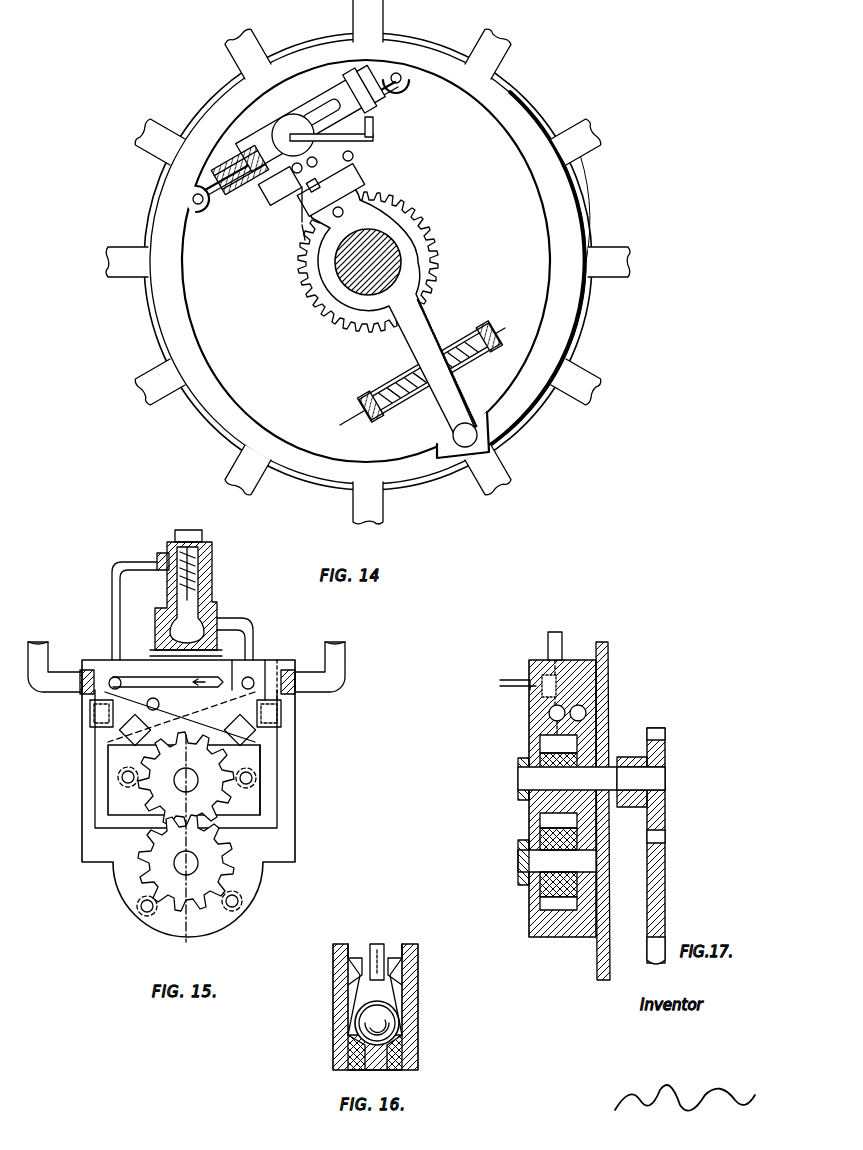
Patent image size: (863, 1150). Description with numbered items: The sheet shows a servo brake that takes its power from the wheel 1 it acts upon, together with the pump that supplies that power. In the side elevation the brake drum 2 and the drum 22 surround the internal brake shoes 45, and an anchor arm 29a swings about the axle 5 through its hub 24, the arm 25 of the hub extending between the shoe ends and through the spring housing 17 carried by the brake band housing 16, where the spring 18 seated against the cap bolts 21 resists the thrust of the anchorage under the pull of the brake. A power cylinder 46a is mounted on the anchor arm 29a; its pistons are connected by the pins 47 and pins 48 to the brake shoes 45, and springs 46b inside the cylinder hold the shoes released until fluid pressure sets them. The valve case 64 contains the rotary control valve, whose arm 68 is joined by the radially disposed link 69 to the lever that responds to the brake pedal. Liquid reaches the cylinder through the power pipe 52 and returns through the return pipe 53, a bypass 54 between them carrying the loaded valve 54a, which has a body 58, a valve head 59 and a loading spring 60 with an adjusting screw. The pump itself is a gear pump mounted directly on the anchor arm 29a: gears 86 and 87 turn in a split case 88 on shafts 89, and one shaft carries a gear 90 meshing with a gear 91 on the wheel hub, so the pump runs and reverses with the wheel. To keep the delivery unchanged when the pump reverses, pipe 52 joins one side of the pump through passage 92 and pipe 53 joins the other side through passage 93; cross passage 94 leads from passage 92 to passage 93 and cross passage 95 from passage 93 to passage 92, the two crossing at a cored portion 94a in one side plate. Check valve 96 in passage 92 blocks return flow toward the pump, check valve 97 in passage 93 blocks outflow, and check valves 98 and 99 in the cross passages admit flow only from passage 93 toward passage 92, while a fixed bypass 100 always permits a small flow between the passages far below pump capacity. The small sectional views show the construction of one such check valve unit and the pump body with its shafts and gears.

In FIG. 14, the wheel 1 is at (495, 40).
In FIG. 14, the brake drum 2 is at (208, 423).
In FIG. 14, the axle 5 is at (398, 247).
In FIG. 15, the brake band housing 16 is at (240, 720).
In FIG. 14, the spring housing 17 is at (396, 404).
In FIG. 15, the spring housing 17 is at (187, 953).
In FIG. 14, the spring 18 is at (393, 378).
In FIG. 14, the cap bolt 21 is at (360, 412).
In FIG. 14, the brake drum 22 is at (580, 188).
In FIG. 14, the hub 24 is at (412, 267).
In FIG. 14, the arm 25 is at (460, 412).
In FIG. 14, the anchor arm 29a is at (327, 241).
In FIG. 17, the anchor arm 29a is at (598, 952).
In FIG. 14, the internal brake shoes 45 is at (566, 252).
In FIG. 14, the power cylinder 46a is at (330, 106).
In FIG. 14, the spring 46b is at (262, 148).
In FIG. 14, the pin 47 is at (212, 187).
In FIG. 14, the pin 48 is at (200, 204).
In FIG. 14, the power circuit pipe 52 is at (353, 158).
In FIG. 15, the power circuit pipe 52 is at (347, 651).
In FIG. 14, the return pipe 53 is at (296, 197).
In FIG. 15, the return pipe 53 is at (46, 655).
In FIG. 17, the return pipe 53 is at (566, 645).
In FIG. 14, the bypass 54 is at (302, 222).
In FIG. 15, the bypass 54 is at (115, 580).
In FIG. 17, the bypass 54 is at (500, 683).
In FIG. 14, the loaded valve 54a is at (345, 186).
In FIG. 15, the loaded valve 54a is at (178, 538).
In FIG. 15, the valve body 58 is at (213, 612).
In FIG. 15, the valve head 59 is at (205, 584).
In FIG. 15, the loading spring 60 is at (212, 556).
In FIG. 14, the valve case 64 is at (290, 134).
In FIG. 14, the arm 68 is at (377, 160).
In FIG. 14, the link 69 is at (374, 124).
In FIG. 15, the gear 86 is at (167, 864).
In FIG. 17, the gear 86 is at (540, 832).
In FIG. 15, the gear 87 is at (165, 786).
In FIG. 17, the gear 87 is at (540, 750).
In FIG. 15, the split case 88 is at (287, 853).
In FIG. 17, the split case 88 is at (586, 673).
In FIG. 15, the shaft 89 is at (183, 778).
In FIG. 17, the shaft 89 is at (533, 777).
In FIG. 17, the gear 90 is at (667, 748).
In FIG. 14, the gear 91 is at (314, 293).
In FIG. 17, the gear 91 is at (668, 868).
In FIG. 15, the passage 92 is at (268, 782).
In FIG. 15, the passage 93 is at (100, 766).
In FIG. 15, the cross passage 94 is at (222, 720).
In FIG. 15, the cored portion 94a is at (242, 738).
In FIG. 17, the cored portion 94a is at (586, 713).
In FIG. 15, the cross passage 95 is at (122, 690).
In FIG. 17, the cross passage 95 is at (542, 706).
In FIG. 15, the check valve 96 is at (283, 720).
In FIG. 16, the check valve 96 is at (326, 1030).
In FIG. 15, the check valve 97 is at (88, 712).
In FIG. 15, the check valve 98 is at (120, 735).
In FIG. 15, the check valve 99 is at (256, 680).
In FIG. 15, the fixed bypass 100 is at (200, 677).
In FIG. 17, the fixed bypass 100 is at (548, 683).